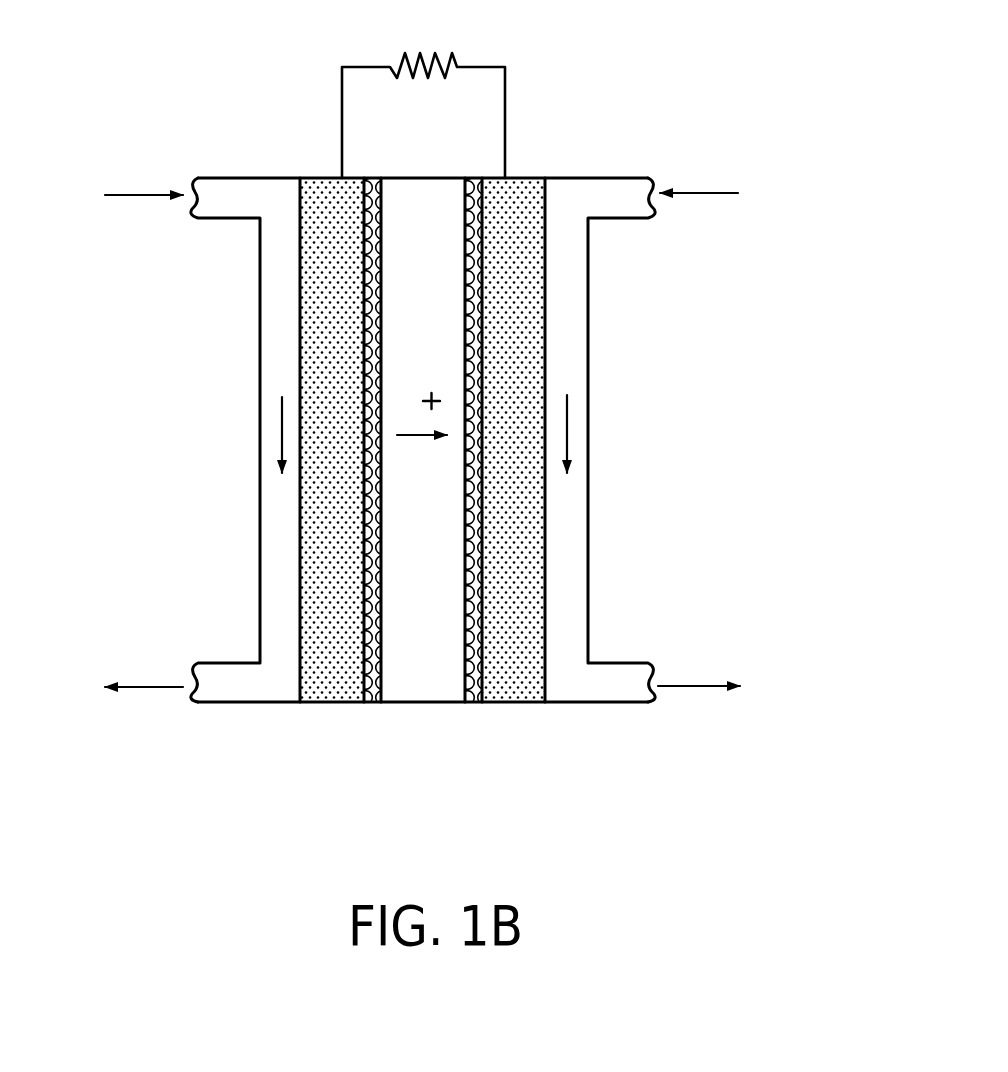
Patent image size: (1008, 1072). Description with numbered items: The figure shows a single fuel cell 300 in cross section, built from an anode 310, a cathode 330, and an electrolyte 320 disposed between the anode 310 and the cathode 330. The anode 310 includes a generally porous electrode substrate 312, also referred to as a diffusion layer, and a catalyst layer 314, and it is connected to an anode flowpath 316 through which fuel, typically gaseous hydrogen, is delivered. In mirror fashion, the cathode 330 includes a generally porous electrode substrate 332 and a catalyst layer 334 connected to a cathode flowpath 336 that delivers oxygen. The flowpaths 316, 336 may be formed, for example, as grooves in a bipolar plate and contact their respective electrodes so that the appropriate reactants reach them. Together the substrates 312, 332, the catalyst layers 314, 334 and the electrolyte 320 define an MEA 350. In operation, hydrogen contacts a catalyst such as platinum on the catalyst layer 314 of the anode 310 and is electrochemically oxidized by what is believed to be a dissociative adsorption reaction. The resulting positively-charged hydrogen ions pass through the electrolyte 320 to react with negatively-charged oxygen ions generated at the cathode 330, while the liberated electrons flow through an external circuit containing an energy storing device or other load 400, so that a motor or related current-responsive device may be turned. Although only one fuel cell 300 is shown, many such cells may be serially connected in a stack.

The fuel cell 300 is at (182, 88).
The anode 310 is at (364, 715).
The porous electrode substrate 312 is at (312, 188).
The catalyst layer 314 is at (373, 188).
The anode flowpath 316 is at (262, 298).
The electrolyte 320 is at (470, 715).
The cathode 330 is at (552, 715).
The porous electrode substrate 332 is at (532, 182).
The catalyst layer 334 is at (472, 188).
The cathode flowpath 336 is at (586, 298).
The MEA 350 is at (560, 783).
The load 400 is at (440, 52).